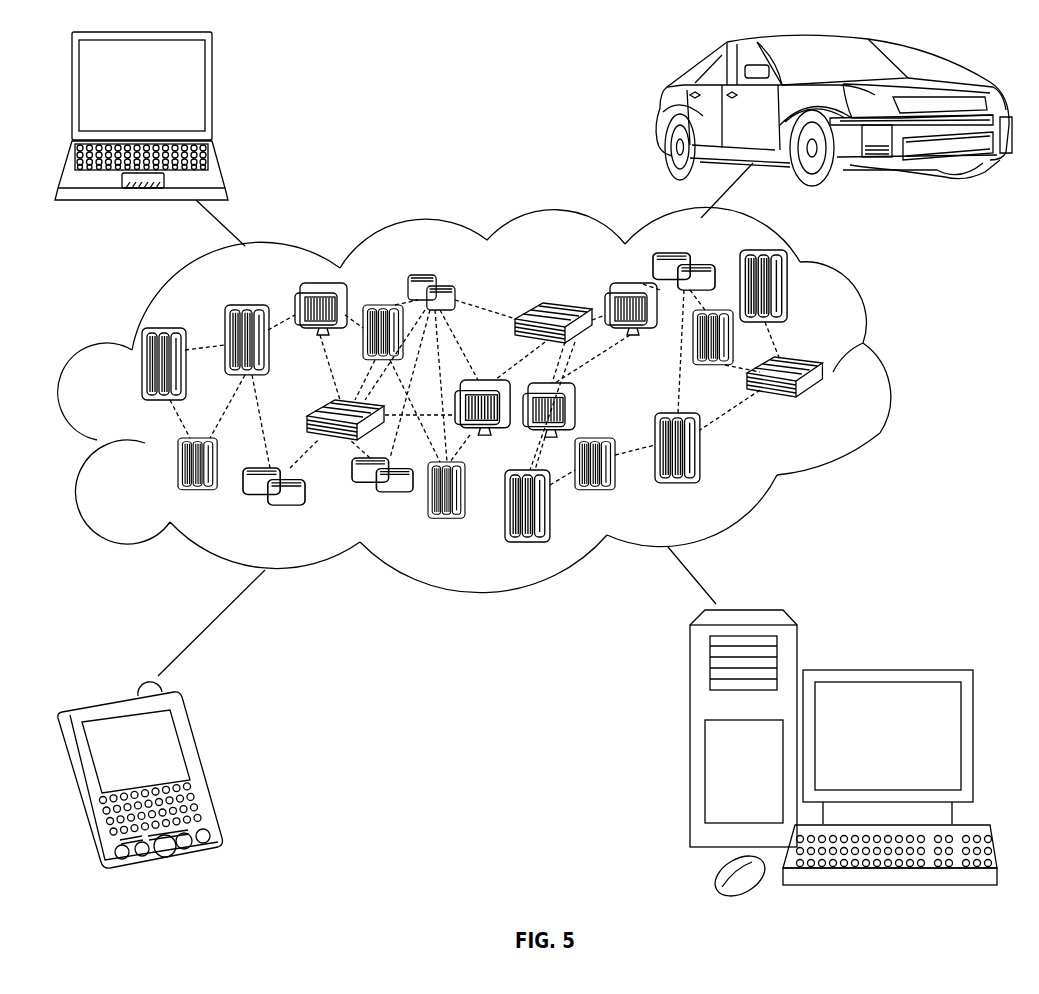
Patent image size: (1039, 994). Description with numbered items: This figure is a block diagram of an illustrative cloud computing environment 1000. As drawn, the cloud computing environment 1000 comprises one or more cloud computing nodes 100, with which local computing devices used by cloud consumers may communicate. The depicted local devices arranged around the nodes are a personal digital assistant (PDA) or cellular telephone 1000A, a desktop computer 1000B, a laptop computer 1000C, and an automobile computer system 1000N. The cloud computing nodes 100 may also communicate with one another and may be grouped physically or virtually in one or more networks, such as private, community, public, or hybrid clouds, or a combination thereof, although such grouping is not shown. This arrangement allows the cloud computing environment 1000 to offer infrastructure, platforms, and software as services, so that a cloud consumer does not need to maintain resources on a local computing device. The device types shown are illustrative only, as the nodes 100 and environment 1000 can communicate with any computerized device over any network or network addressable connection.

The laptop computer 1000C is at (213, 94).
The automobile computer system 1000N is at (658, 108).
The cloud computing environment 1000 is at (512, 399).
The cloud computing nodes 100 is at (827, 407).
The personal digital assistant (PDA) or cellular telephone 1000A is at (207, 766).
The desktop computer 1000B is at (884, 668).